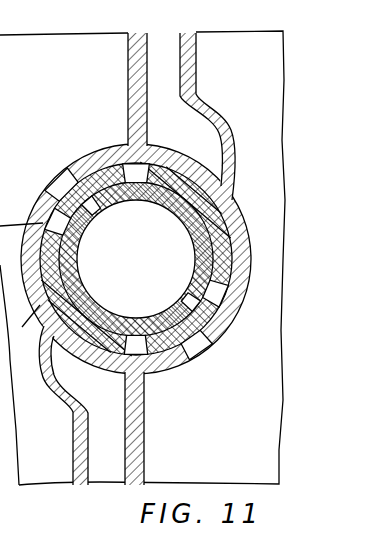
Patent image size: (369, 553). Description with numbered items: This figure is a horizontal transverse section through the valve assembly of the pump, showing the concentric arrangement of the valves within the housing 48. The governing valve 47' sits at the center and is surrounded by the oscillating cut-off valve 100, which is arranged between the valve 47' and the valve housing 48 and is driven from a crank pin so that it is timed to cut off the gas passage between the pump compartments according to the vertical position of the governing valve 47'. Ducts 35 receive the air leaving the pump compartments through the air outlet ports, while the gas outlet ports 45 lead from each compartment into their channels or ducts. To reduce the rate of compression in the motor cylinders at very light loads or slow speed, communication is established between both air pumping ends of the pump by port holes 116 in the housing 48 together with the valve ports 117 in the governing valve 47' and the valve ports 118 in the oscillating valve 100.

The duct 35 is at (142, 258).
The gas outlet port 45 is at (135, 259).
The governing valve 47' is at (154, 259).
The valve housing 48 is at (120, 259).
The oscillating cut-off valve 100 is at (238, 226).
The port hole 116 is at (63, 172).
The valve port 117 is at (92, 210).
The valve port 118 is at (128, 160).